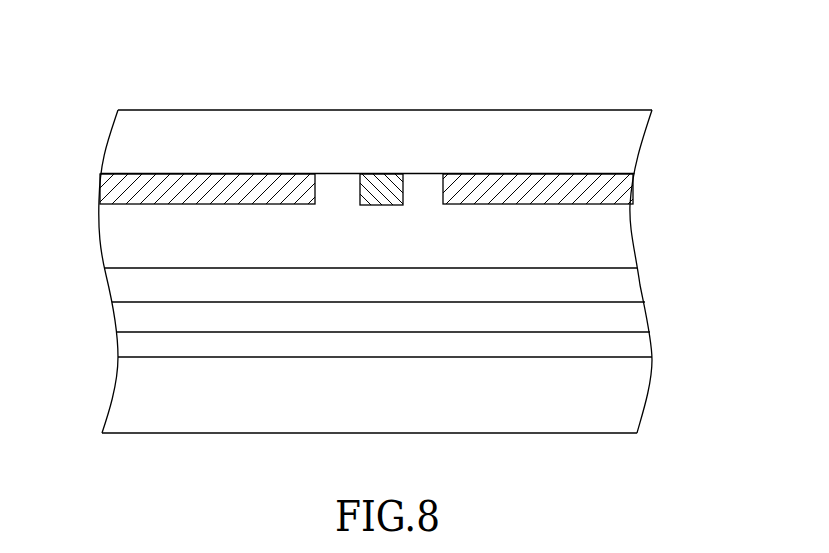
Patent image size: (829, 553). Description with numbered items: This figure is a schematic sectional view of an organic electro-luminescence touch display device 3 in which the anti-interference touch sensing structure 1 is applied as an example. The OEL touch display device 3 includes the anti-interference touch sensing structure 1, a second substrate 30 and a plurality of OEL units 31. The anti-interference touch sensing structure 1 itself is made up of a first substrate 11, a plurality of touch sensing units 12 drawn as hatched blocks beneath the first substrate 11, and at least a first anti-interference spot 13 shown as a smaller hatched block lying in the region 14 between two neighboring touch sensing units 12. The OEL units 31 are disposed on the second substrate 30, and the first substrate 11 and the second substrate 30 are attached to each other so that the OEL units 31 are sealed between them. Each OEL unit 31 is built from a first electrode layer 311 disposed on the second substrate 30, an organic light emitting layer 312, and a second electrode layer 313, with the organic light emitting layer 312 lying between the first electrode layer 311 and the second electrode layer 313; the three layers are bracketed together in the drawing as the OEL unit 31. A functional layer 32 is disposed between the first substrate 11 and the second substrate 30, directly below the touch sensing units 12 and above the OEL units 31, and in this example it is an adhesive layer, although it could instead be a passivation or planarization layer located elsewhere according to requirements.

The OEL touch display device 3 is at (126, 43).
The anti-interference touch sensing structure 1 is at (580, 108).
The first substrate 11 is at (620, 145).
The touch sensing units 12 is at (235, 182).
The first anti-interference spot 13 is at (381, 195).
The gap region 14 is at (440, 165).
The functional layer 32 is at (620, 238).
The OEL units 31 is at (720, 272).
The second electrode layer 313 is at (625, 287).
The organic light emitting layer 312 is at (630, 318).
The first electrode layer 311 is at (636, 346).
The second substrate 30 is at (628, 402).